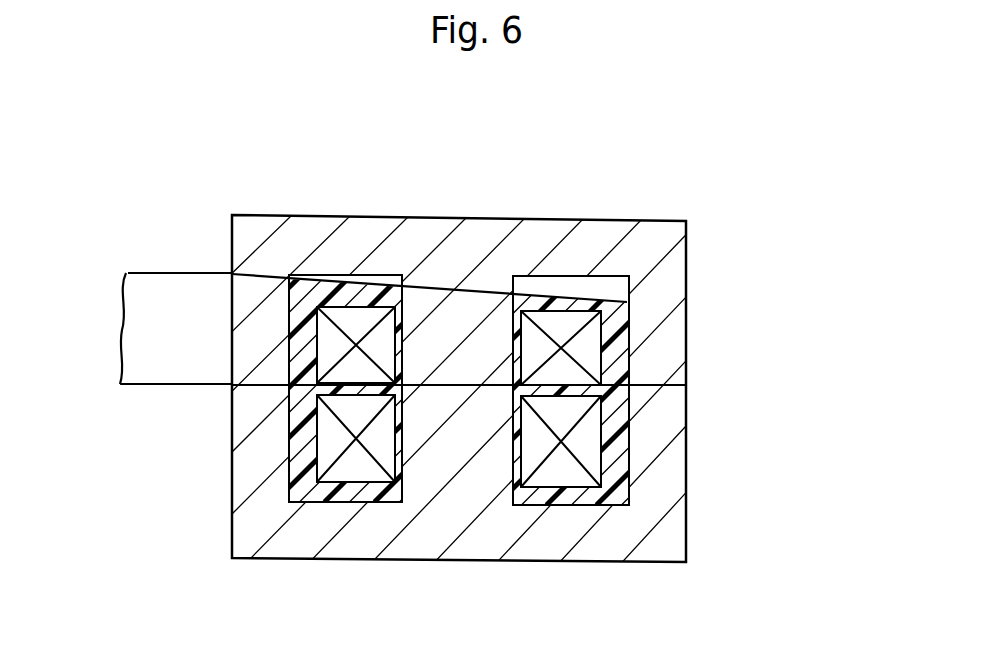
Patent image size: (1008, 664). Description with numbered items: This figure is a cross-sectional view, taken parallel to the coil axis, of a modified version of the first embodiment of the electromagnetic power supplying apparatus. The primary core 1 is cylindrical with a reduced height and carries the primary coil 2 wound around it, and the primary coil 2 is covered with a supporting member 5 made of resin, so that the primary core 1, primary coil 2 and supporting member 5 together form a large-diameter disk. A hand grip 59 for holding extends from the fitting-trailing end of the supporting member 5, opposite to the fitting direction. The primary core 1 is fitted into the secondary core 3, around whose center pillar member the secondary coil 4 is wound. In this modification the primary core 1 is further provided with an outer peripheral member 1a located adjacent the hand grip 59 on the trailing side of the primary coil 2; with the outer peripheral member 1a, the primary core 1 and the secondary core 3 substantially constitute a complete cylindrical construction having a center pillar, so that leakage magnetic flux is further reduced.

The primary core 1 is at (450, 323).
The outer peripheral member 1a is at (236, 369).
The primary coil 2 is at (580, 345).
The secondary core 3 is at (663, 347).
The secondary coil 4 is at (587, 450).
The supporting member 5 is at (612, 373).
The hand grip 59 is at (152, 288).